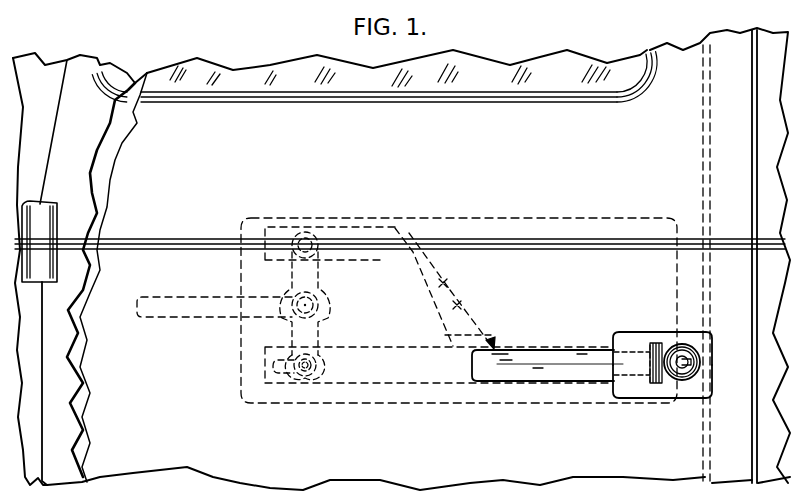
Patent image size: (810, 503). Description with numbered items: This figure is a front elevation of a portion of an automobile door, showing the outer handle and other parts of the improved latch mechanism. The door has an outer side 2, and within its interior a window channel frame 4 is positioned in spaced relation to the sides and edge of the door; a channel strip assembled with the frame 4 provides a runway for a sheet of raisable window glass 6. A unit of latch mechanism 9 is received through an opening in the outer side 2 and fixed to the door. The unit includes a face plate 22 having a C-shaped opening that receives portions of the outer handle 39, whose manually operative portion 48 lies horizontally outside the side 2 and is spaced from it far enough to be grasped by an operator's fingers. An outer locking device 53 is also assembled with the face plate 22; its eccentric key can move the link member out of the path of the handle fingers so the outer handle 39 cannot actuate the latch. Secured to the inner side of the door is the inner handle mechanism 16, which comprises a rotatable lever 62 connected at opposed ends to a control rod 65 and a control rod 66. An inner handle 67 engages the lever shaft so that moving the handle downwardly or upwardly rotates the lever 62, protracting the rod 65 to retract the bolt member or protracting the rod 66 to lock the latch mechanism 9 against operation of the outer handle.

The outer side 2 is at (550, 107).
The window channel frame 4 is at (726, 412).
The window glass 6 is at (487, 66).
The latch mechanism 9 is at (688, 398).
The inner handle mechanism 16 is at (446, 281).
The face plate 22 is at (628, 337).
The outer handle 39 is at (532, 349).
The manually operative portion 48 is at (526, 372).
The outer locking device 53 is at (683, 345).
The rotatable lever 62 is at (310, 333).
The control rod 65 is at (399, 378).
The control rod 66 is at (459, 306).
The inner handle 67 is at (200, 317).